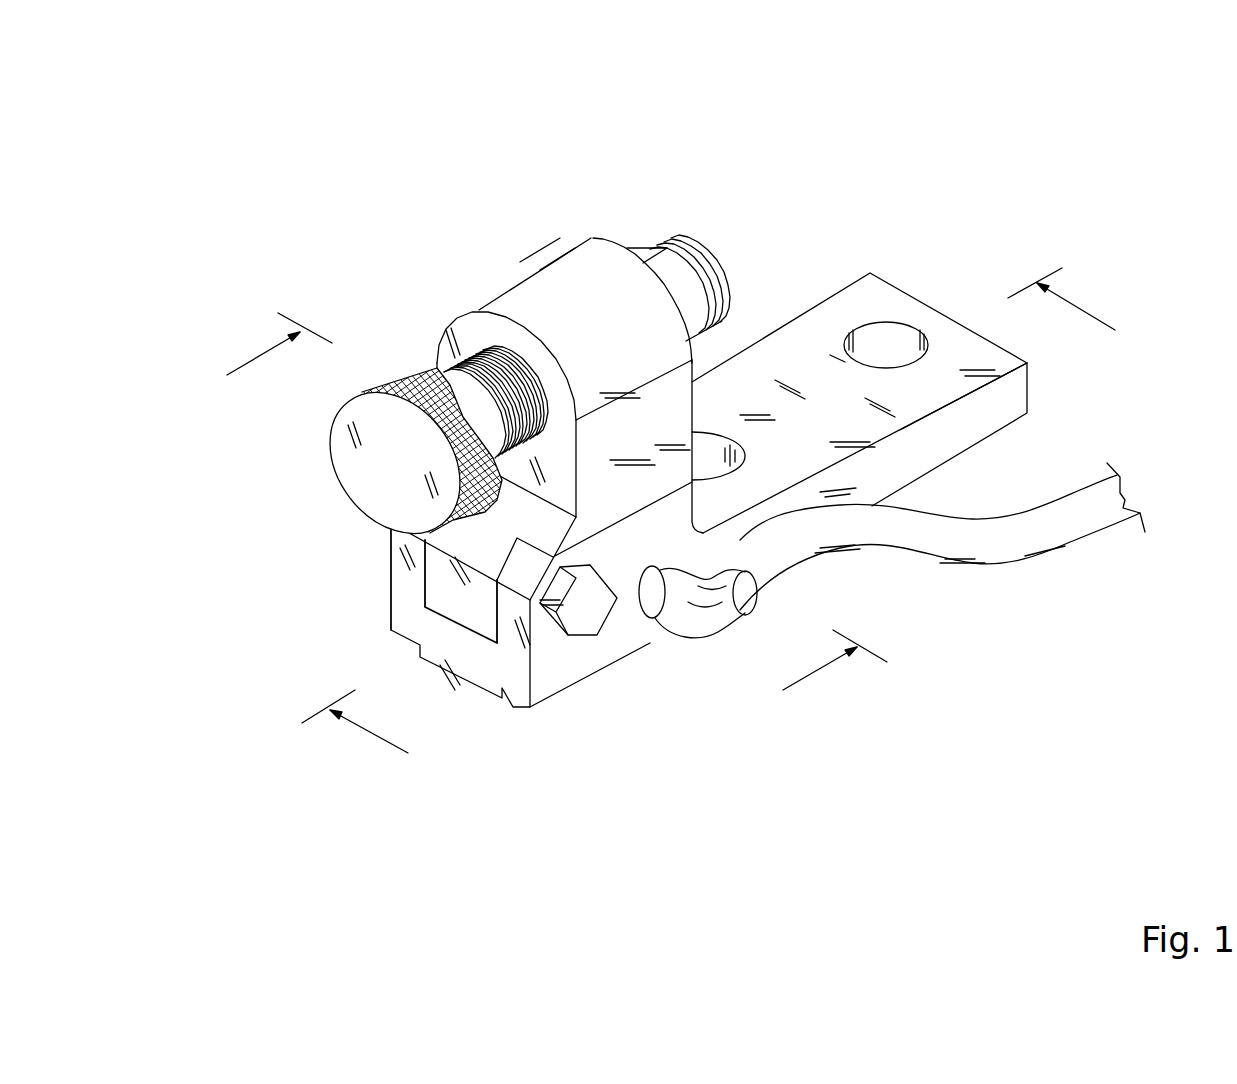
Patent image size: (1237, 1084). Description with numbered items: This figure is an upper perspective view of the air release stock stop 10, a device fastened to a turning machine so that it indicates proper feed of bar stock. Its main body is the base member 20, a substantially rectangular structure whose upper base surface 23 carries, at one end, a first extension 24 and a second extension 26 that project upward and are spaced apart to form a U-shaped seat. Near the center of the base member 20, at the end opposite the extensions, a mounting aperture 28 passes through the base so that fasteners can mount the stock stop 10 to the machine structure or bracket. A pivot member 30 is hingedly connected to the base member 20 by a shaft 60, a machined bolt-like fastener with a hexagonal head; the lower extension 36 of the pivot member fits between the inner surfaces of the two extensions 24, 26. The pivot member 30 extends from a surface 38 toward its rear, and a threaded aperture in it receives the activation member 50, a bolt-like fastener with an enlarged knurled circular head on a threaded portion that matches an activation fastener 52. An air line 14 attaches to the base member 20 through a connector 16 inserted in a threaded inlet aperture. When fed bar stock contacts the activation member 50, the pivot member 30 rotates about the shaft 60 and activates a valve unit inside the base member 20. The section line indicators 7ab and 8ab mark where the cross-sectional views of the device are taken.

The air release stock stop 10 is at (735, 163).
The air line 14 is at (987, 537).
The connector 16 is at (757, 607).
The base member 20 is at (837, 290).
The upper base surface 23 is at (953, 365).
The first extension 24 is at (512, 645).
The second extension 26 is at (403, 578).
The mounting aperture 28 is at (890, 333).
The pivot member 30 is at (532, 258).
The lower extension 36 is at (443, 590).
The surface 38 is at (463, 323).
The activation member 50 is at (380, 373).
The activation fastener 52 is at (660, 263).
The shaft 60 is at (587, 605).
The section line 7A-7B 7ab is at (734, 530).
The section line 8A-8B 8ab is at (536, 523).